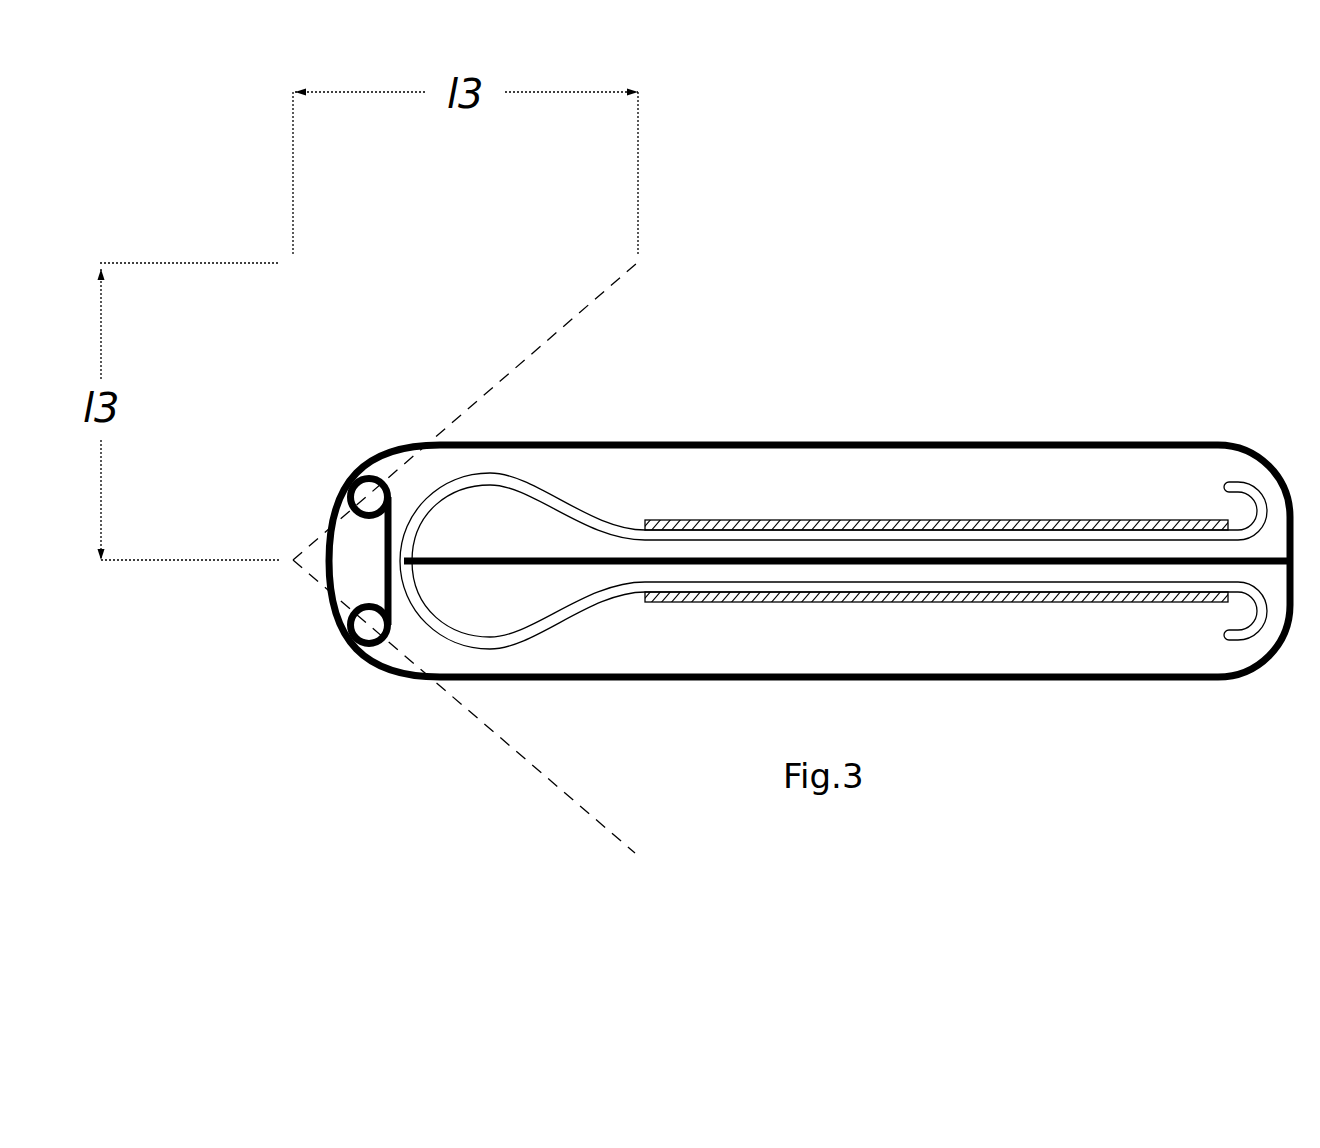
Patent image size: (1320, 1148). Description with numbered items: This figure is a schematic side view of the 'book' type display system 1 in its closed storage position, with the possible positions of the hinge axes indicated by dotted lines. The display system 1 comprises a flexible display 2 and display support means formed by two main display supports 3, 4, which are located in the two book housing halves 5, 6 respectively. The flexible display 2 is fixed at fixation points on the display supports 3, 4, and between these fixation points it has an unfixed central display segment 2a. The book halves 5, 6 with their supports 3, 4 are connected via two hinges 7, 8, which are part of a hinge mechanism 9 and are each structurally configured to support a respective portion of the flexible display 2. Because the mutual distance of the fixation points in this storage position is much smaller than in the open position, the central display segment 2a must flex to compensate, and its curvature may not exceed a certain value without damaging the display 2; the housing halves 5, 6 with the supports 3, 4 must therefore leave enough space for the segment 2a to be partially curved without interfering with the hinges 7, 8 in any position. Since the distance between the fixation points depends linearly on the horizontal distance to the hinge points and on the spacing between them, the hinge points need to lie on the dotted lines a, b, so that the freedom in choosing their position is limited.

The display system 1 is at (771, 561).
The flexible display 2 is at (842, 505).
The central display segment 2a is at (540, 483).
The main display support 3 is at (943, 522).
The main display support 4 is at (953, 595).
The book housing half 5 is at (1107, 438).
The book housing half 6 is at (1156, 684).
The hinge 7 is at (353, 494).
The hinge 8 is at (367, 625).
The hinge mechanism 9 is at (348, 570).
The dotted line a is at (562, 792).
The dotted line b is at (596, 300).